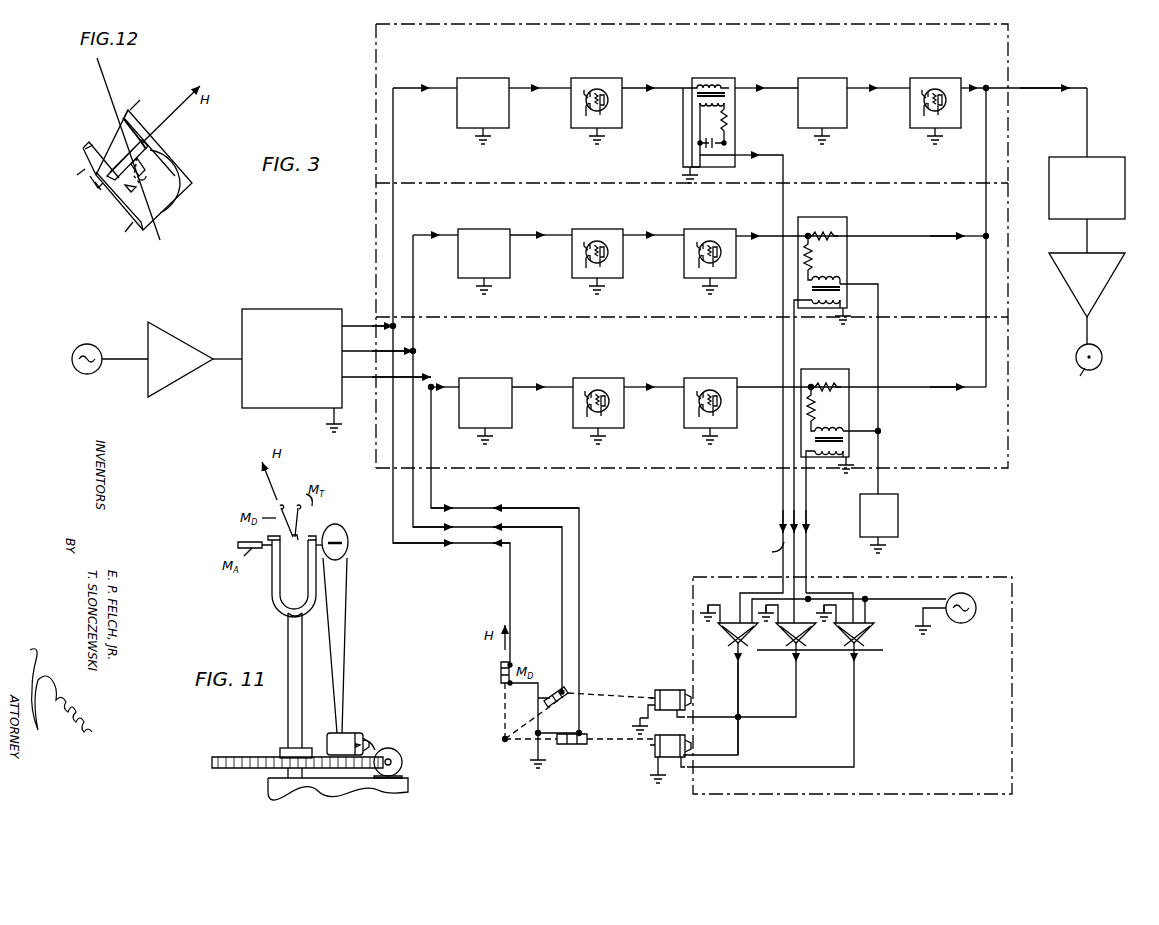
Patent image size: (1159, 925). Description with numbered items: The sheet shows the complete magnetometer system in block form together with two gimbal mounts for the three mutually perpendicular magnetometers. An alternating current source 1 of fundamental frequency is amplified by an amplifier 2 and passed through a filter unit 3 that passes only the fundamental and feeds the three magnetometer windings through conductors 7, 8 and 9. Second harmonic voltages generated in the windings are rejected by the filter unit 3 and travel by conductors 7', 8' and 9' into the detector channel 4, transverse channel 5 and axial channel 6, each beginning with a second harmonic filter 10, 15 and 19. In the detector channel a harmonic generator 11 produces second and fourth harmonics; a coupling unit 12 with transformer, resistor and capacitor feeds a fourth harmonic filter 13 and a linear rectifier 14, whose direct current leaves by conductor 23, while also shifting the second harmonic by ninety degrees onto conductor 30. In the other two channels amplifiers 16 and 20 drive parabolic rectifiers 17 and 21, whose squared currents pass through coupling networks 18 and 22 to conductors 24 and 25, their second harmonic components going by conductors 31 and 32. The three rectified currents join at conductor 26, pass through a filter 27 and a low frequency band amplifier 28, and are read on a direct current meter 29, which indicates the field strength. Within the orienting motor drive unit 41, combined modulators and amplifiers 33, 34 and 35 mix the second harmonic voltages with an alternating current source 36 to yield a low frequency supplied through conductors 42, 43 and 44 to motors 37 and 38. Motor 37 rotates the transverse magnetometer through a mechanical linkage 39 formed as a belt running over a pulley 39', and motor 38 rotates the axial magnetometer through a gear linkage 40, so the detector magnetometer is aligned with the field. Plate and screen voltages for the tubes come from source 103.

In FIG. 3, the alternating current source 1 is at (99, 349).
In FIG. 3, the amplifier 2 is at (180, 341).
In FIG. 3, the filter unit 3 is at (280, 309).
In FIG. 3, the detector channel 4 is at (692, 246).
In FIG. 3, the transverse channel 5 is at (692, 250).
In FIG. 3, the axial channel 6 is at (692, 392).
In FIG. 3, the conductor 7 is at (451, 375).
In FIG. 3, the conductor 7' is at (425, 88).
In FIG. 3, the conductor 8 is at (487, 461).
In FIG. 3, the conductor 8' is at (435, 236).
In FIG. 3, the conductor 9 is at (504, 559).
In FIG. 3, the conductor 9' is at (445, 388).
In FIG. 3, the second harmonic filter 10 is at (509, 120).
In FIG. 3, the harmonic generator 11 is at (622, 120).
In FIG. 3, the coupling unit 12 is at (735, 128).
In FIG. 3, the fourth harmonic filter 13 is at (847, 118).
In FIG. 3, the linear rectifier 14 is at (910, 120).
In FIG. 3, the second harmonic filter 15 is at (510, 270).
In FIG. 3, the amplifier 16 is at (623, 270).
In FIG. 3, the parabolic rectifier 17 is at (736, 270).
In FIG. 3, the coupling network 18 is at (847, 270).
In FIG. 3, the second harmonic filter 19 is at (512, 418).
In FIG. 3, the amplifier 20 is at (624, 418).
In FIG. 3, the parabolic rectifier 21 is at (737, 418).
In FIG. 3, the coupling network 22 is at (849, 418).
In FIG. 3, the conductor 23 is at (986, 86).
In FIG. 3, the conductor 24 is at (890, 236).
In FIG. 3, the conductor 25 is at (900, 387).
In FIG. 3, the conductor 26 is at (1087, 130).
In FIG. 3, the filter 27 is at (1125, 190).
In FIG. 3, the low frequency band amplifier 28 is at (1100, 296).
In FIG. 3, the direct current meter 29 is at (1102, 352).
In FIG. 3, the conductor 30 is at (783, 170).
In FIG. 3, the conductor 31 is at (792, 500).
In FIG. 3, the conductor 32 is at (804, 518).
In FIG. 3, the combined modulator and amplifier 33 is at (721, 638).
In FIG. 3, the combined modulator and amplifier 34 is at (778, 638).
In FIG. 3, the combined modulator and amplifier 35 is at (836, 638).
In FIG. 3, the alternating current source 36 is at (968, 622).
In FIG. 3, the motor 37 is at (673, 680).
In FIG. 11, the motor 37 is at (345, 733).
In FIG. 3, the motor 38 is at (650, 760).
In FIG. 11, the motor 38 is at (398, 750).
In FIG. 3, the mechanical linkage 39 is at (579, 702).
In FIG. 11, the mechanical linkage 39 is at (348, 645).
In FIG. 11, the pulley 39' is at (346, 542).
In FIG. 12, the pulley 39' is at (126, 166).
In FIG. 3, the mechanical linkage 40 is at (595, 746).
In FIG. 11, the mechanical linkage 40 is at (380, 746).
In FIG. 3, the orienting motor drive unit 41 is at (1000, 577).
In FIG. 3, the conductor 42 is at (738, 690).
In FIG. 3, the conductor 43 is at (796, 690).
In FIG. 3, the conductor 44 is at (770, 714).
In FIG. 3, the direct current source 103 is at (904, 512).